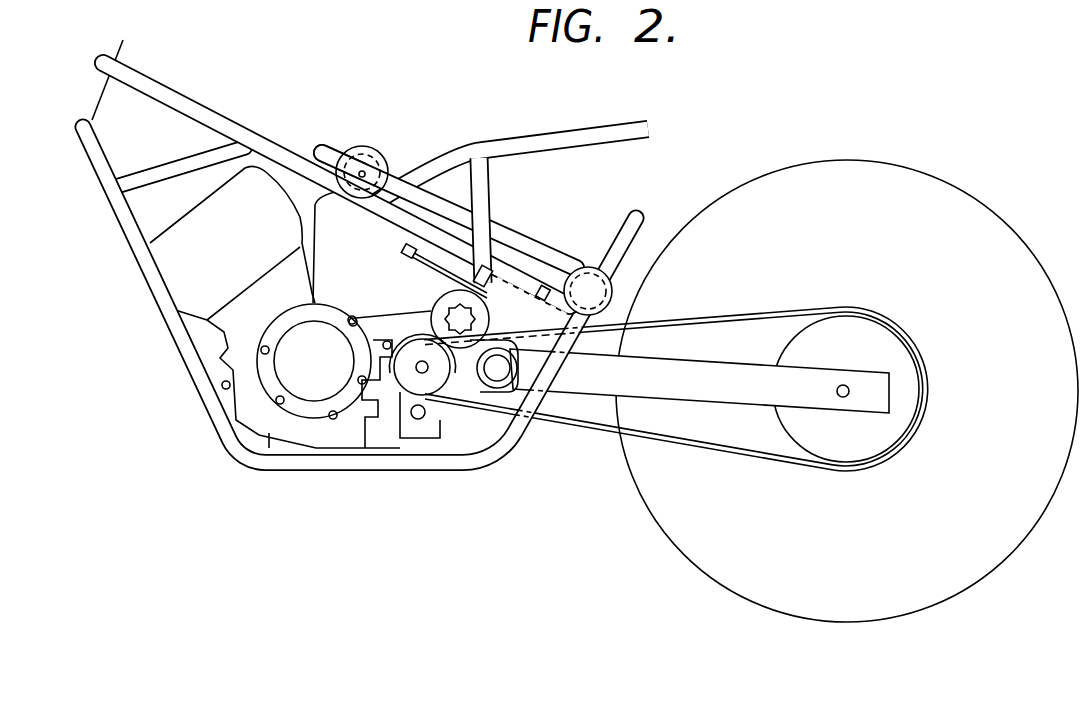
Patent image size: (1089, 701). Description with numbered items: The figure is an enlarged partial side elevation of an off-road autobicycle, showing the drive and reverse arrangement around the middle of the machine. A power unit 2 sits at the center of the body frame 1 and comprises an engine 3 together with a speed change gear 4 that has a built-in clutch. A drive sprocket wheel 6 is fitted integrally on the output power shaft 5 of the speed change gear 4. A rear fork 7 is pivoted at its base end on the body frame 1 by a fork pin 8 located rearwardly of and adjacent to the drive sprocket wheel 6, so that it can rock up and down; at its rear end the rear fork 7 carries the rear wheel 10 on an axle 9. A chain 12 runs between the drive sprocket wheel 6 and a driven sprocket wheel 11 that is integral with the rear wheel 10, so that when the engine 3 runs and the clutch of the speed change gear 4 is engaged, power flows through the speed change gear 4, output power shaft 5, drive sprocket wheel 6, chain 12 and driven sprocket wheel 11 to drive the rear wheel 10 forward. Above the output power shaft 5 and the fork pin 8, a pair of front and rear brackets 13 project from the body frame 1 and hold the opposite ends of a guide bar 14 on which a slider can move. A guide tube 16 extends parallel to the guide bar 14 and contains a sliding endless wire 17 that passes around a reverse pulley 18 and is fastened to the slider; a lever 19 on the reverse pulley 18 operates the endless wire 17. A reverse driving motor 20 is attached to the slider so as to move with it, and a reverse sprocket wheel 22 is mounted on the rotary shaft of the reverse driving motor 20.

The body frame 1 is at (220, 115).
The power unit 2 is at (259, 438).
The engine 3 is at (205, 270).
The speed change gear 4 is at (386, 413).
The output power shaft 5 is at (424, 373).
The drive sprocket wheel 6 is at (441, 372).
The rear fork 7 is at (590, 383).
The fork pin 8 is at (497, 372).
The axle 9 is at (840, 398).
The rear wheel 10 is at (893, 199).
The driven sprocket wheel 11 is at (880, 362).
The chain 12 is at (620, 440).
The brackets 13 is at (402, 248).
The guide bar 14 is at (416, 258).
The guide tube 16 is at (518, 232).
The endless wire 17 is at (489, 225).
The reverse pulley 18 is at (376, 148).
The lever 19 is at (332, 147).
The reverse driving motor 20 is at (572, 278).
The reverse sprocket wheel 22 is at (428, 312).